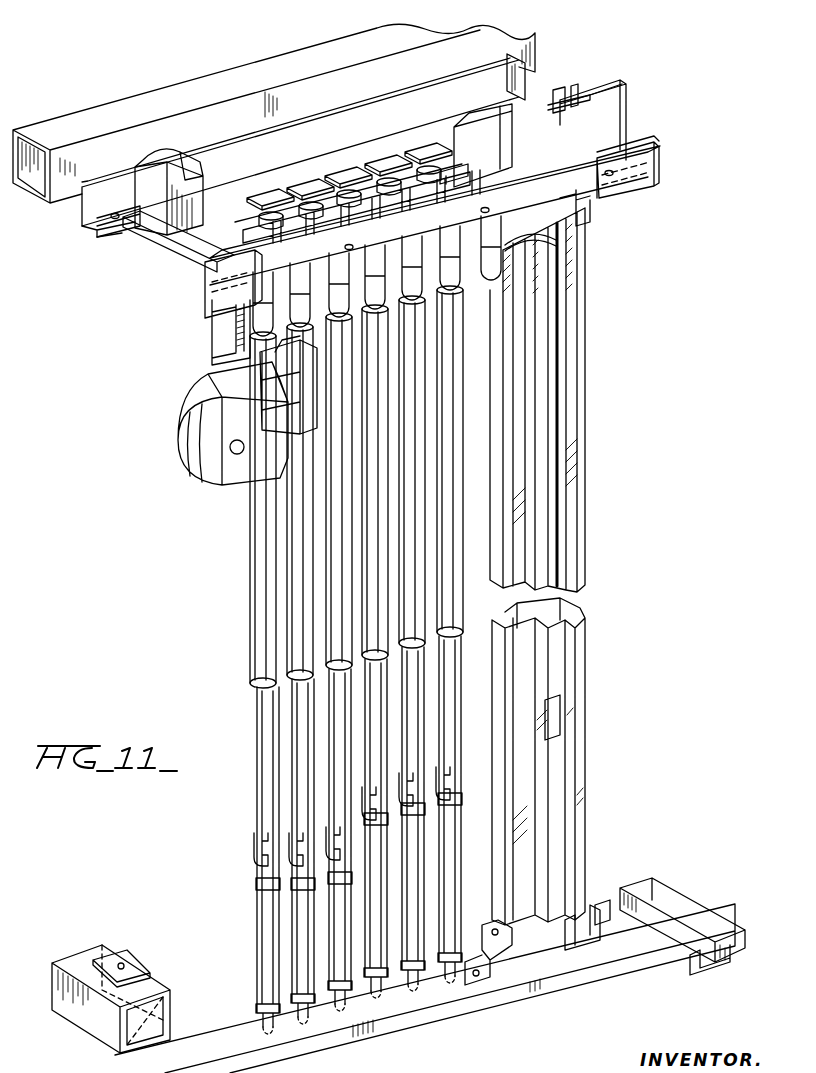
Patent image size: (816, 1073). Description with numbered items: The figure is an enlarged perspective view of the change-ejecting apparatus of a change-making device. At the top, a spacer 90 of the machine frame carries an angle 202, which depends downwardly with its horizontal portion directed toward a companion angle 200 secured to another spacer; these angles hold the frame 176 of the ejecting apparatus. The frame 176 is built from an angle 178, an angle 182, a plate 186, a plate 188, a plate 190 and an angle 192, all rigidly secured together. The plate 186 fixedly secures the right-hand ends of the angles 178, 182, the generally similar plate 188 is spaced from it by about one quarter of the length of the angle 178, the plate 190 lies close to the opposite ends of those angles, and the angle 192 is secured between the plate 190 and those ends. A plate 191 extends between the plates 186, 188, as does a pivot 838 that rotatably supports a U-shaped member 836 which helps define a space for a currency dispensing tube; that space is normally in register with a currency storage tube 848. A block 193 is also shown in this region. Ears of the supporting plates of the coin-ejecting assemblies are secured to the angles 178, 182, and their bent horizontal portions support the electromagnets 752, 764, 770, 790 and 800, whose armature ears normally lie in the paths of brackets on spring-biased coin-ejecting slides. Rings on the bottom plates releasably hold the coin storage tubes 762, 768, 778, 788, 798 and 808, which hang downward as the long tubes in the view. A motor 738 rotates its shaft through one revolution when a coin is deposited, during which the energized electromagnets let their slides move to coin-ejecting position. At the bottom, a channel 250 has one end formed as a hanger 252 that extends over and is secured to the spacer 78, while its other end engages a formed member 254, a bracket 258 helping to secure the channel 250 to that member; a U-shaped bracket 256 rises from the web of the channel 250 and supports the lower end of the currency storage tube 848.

The spacer 90 is at (152, 94).
The angle 202 is at (425, 86).
The frame 176 is at (150, 243).
The angle 182 is at (116, 240).
The angle 192 is at (180, 264).
The clamp block 193 is at (152, 152).
The plate 190 is at (278, 249).
The angle 200 is at (207, 299).
The electromagnet 752 is at (248, 196).
The electromagnet 764 is at (282, 188).
The electromagnet 770 is at (318, 178).
The coin storage tube 788 is at (350, 170).
The electromagnet 790 is at (388, 155).
The electromagnet 800 is at (422, 148).
The plate 188 is at (504, 164).
The plate 191 is at (597, 130).
The plate 186 is at (600, 93).
The U-shaped member 836 is at (560, 88).
The pivot 838 is at (578, 90).
The angle 178 is at (577, 195).
The coin storage tube 762 is at (254, 678).
The coin storage tube 768 is at (306, 668).
The coin storage tube 778 is at (350, 657).
The coin storage tube 798 is at (412, 640).
The coin storage tube 808 is at (455, 632).
The motor 738 is at (178, 446).
The currency storage tube 848 is at (580, 528).
The channel 250 is at (484, 1001).
The spacer 78 is at (82, 1028).
The hanger 252 is at (119, 957).
The formed member 254 is at (687, 898).
The U-shaped bracket 256 is at (583, 933).
The bracket 258 is at (680, 970).